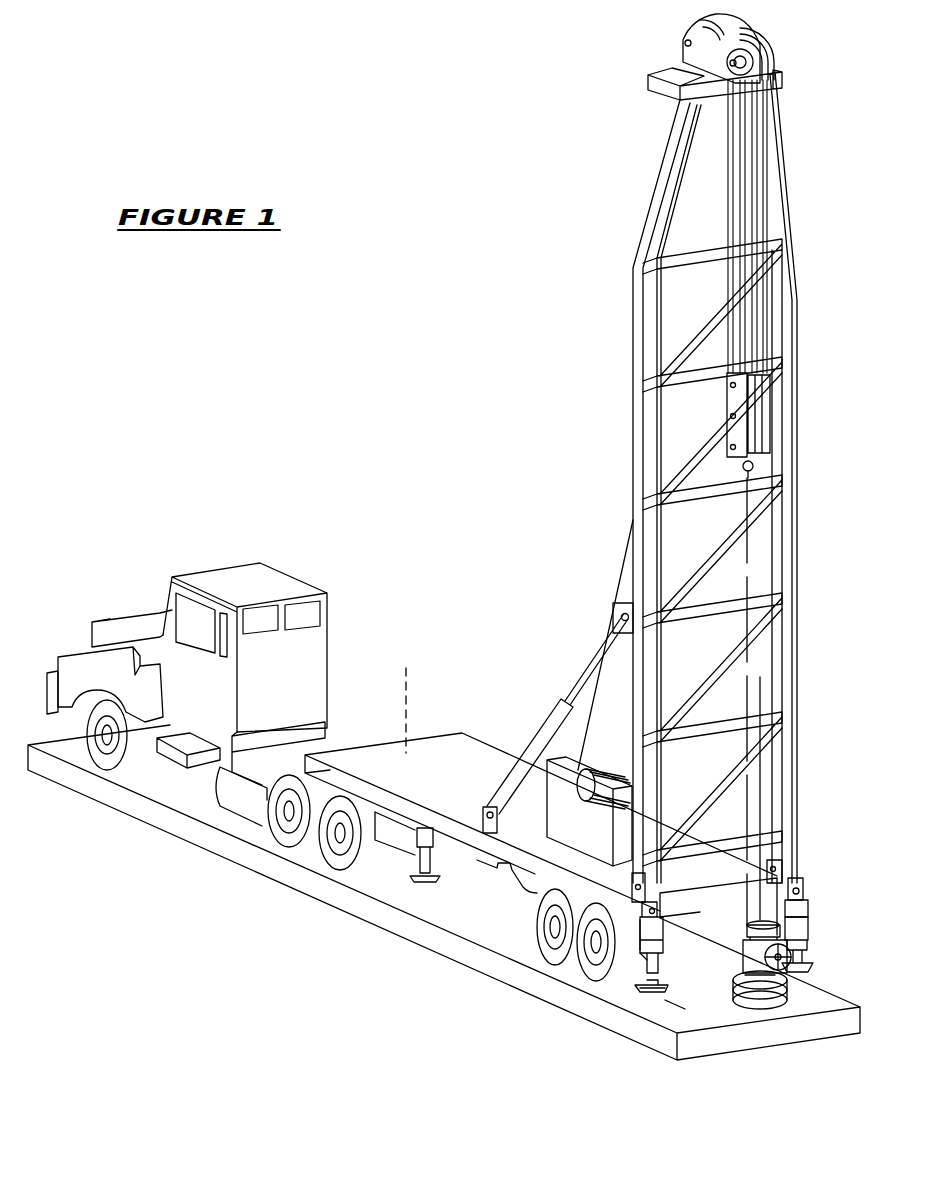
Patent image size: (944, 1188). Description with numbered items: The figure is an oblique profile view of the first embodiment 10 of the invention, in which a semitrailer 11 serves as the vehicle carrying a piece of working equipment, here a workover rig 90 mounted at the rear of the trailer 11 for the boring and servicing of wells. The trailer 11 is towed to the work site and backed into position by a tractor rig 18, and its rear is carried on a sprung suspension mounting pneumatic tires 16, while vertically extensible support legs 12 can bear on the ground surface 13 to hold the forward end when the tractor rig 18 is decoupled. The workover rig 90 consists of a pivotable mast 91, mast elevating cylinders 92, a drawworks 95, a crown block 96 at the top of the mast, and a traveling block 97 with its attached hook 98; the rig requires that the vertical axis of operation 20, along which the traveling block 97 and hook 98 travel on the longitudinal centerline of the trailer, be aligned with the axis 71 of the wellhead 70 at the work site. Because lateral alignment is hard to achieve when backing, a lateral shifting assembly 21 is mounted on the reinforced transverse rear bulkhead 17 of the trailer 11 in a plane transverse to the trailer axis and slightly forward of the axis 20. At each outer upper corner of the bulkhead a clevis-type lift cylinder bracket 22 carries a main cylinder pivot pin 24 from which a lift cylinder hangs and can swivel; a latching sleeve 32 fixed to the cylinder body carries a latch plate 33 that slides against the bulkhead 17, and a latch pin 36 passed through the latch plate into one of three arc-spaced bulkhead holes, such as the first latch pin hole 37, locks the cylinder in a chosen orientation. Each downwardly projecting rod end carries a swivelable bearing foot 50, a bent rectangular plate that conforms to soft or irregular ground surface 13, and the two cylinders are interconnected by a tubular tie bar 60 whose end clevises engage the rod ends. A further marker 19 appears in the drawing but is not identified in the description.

The first embodiment 10 is at (288, 449).
The semitrailer 11 is at (487, 740).
The vertically extensible support legs 12 is at (410, 875).
The ground surface 13 is at (192, 800).
The pneumatic tires 16 is at (543, 960).
The transverse rear bulkhead 17 is at (773, 893).
The tractor rig 18 is at (330, 650).
The reference line 19 is at (406, 668).
The vertical axis of operation 20 is at (750, 563).
The lateral shifting assembly 21 is at (640, 958).
The lift cylinder bracket 22 is at (799, 886).
The main cylinder pivot pin 24 is at (638, 925).
The latching sleeve 32 is at (813, 923).
The latch plate 33 is at (803, 907).
The latch pin 36 is at (791, 946).
The first latch pin hole 37 is at (668, 933).
The bearing foot 50 is at (657, 987).
The tie bar 60 is at (673, 1003).
The wellhead 70 is at (787, 983).
The wellhead axis 71 is at (760, 770).
The workover rig 90 is at (678, 485).
The pivotable mast 91 is at (633, 405).
The mast elevating cylinders 92 is at (540, 728).
The drawworks 95 is at (590, 762).
The crown block 96 is at (763, 37).
The traveling block 97 is at (772, 418).
The hook 98 is at (752, 468).